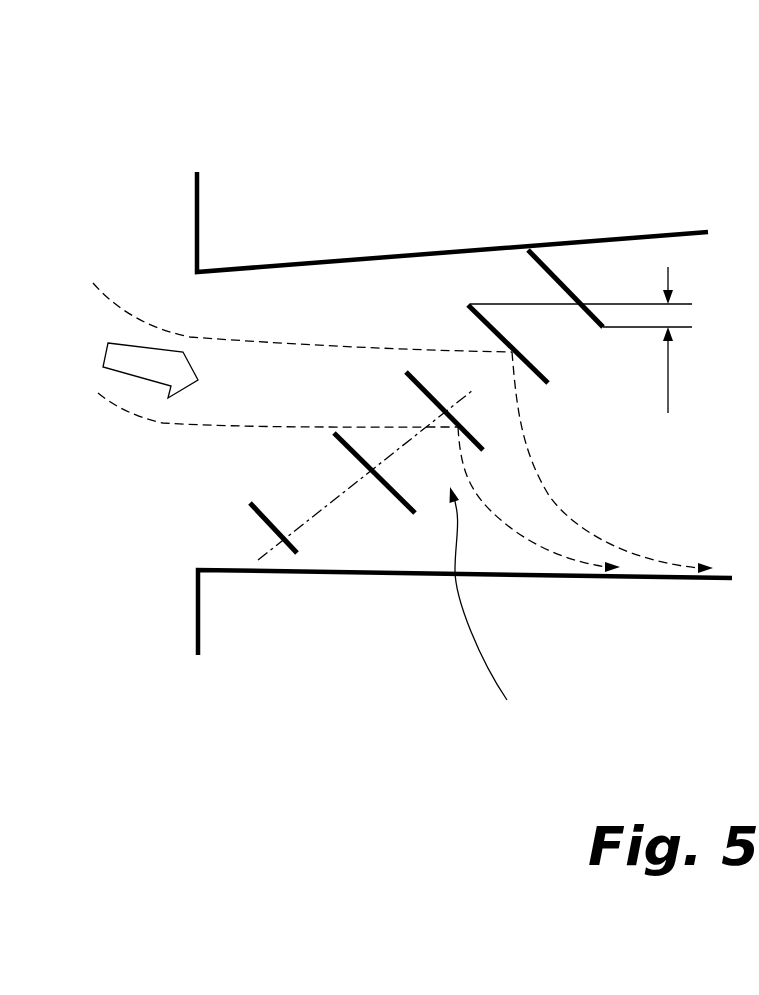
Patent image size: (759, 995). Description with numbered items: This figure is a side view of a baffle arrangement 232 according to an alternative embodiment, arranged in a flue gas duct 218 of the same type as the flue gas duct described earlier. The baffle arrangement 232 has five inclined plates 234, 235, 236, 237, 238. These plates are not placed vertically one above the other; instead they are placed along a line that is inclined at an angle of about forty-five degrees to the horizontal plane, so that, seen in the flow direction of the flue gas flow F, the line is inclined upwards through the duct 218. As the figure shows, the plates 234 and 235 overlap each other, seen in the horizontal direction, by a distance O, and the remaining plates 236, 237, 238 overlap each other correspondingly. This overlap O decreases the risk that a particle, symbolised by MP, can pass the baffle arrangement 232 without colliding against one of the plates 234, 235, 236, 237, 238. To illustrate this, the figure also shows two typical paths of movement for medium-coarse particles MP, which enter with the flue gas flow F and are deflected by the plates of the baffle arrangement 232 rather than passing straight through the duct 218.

The flue gas duct 218 is at (641, 233).
The baffle arrangement 232 is at (501, 618).
The inclined plate 234 is at (563, 283).
The inclined plate 235 is at (477, 317).
The inclined plate 236 is at (418, 390).
The inclined plate 237 is at (395, 500).
The inclined plate 238 is at (272, 522).
The medium-coarse particle MP is at (138, 318).
The flue gas flow F is at (140, 377).
The overlap distance O is at (586, 340).